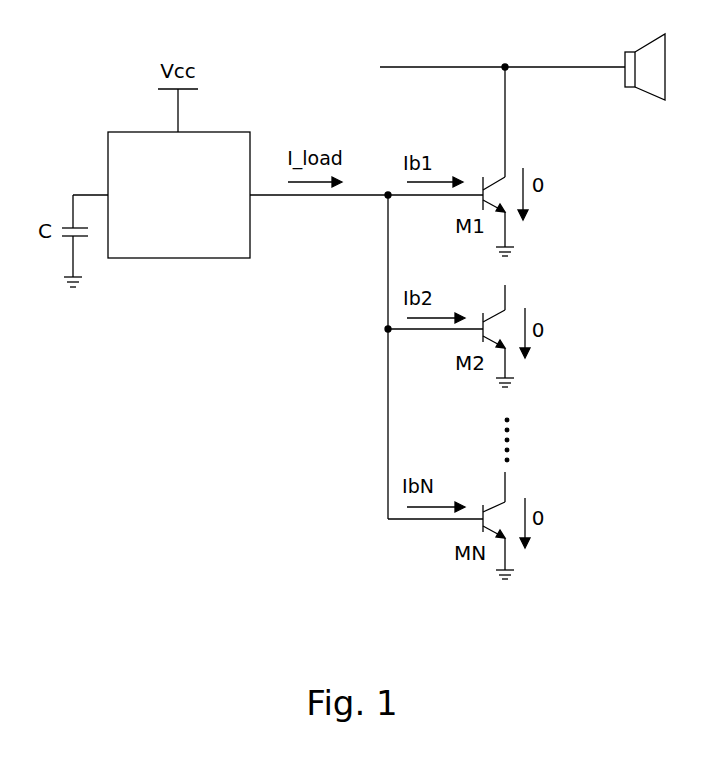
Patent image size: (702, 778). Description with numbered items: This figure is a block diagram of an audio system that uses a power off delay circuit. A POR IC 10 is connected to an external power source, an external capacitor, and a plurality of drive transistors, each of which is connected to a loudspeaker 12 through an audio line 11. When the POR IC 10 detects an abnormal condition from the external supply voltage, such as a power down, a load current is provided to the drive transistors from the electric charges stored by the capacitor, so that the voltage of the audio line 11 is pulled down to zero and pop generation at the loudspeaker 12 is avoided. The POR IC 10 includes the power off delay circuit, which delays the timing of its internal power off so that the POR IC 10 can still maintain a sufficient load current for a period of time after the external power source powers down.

The POR IC 10 is at (173, 258).
The audio line 11 is at (425, 67).
The loudspeaker 12 is at (652, 93).